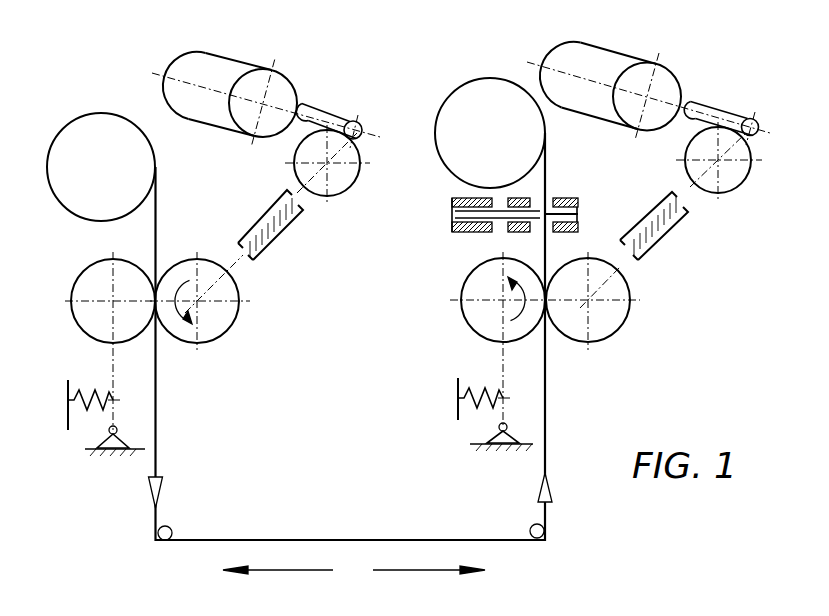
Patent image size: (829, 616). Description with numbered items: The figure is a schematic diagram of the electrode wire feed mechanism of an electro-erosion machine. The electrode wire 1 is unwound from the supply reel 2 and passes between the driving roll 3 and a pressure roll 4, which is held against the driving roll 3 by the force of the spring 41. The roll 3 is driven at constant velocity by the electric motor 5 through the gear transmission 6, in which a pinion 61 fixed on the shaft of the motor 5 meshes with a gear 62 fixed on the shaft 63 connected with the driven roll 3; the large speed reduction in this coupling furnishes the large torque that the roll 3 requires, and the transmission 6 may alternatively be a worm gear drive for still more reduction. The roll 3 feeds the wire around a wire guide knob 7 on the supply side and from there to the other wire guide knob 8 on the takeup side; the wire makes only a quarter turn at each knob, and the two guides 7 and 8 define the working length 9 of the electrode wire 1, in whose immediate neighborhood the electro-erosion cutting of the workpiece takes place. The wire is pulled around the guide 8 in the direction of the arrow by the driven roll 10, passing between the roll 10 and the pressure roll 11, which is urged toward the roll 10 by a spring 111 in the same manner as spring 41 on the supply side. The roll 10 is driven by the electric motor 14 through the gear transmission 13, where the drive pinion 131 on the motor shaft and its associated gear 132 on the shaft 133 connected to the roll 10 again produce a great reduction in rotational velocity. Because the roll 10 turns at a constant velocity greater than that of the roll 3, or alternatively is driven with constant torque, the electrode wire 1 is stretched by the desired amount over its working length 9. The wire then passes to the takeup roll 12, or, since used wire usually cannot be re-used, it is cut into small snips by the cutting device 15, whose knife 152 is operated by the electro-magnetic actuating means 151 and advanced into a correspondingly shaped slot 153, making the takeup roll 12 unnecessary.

The electrode wire 1 is at (157, 230).
The supply reel 2 is at (54, 147).
The driving roll 3 is at (232, 312).
The pressure roll 4 is at (82, 283).
The spring 41 is at (74, 425).
The electric motor 5 is at (204, 62).
The gear transmission 6 is at (377, 168).
The pinion 61 is at (315, 112).
The gear 62 is at (350, 188).
The shaft 63 is at (302, 187).
The wire guide knob 7 is at (158, 540).
The wire guide knob 8 is at (547, 537).
The working length 9 is at (354, 567).
The driven roll 10 is at (623, 312).
The pressure roll 11 is at (472, 313).
The spring support of pressure roller 111 is at (462, 420).
The takeup roll 12 is at (463, 93).
The gear transmission 13 is at (644, 162).
The applicator roller 131 is at (700, 107).
The gear 132 is at (748, 171).
The shaft 133 is at (688, 188).
The electric motor 14 is at (578, 47).
The cutting device 15 is at (439, 205).
The electro-magnetic actuating means 151 is at (462, 232).
The knife 152 is at (510, 227).
The slot 153 is at (578, 210).